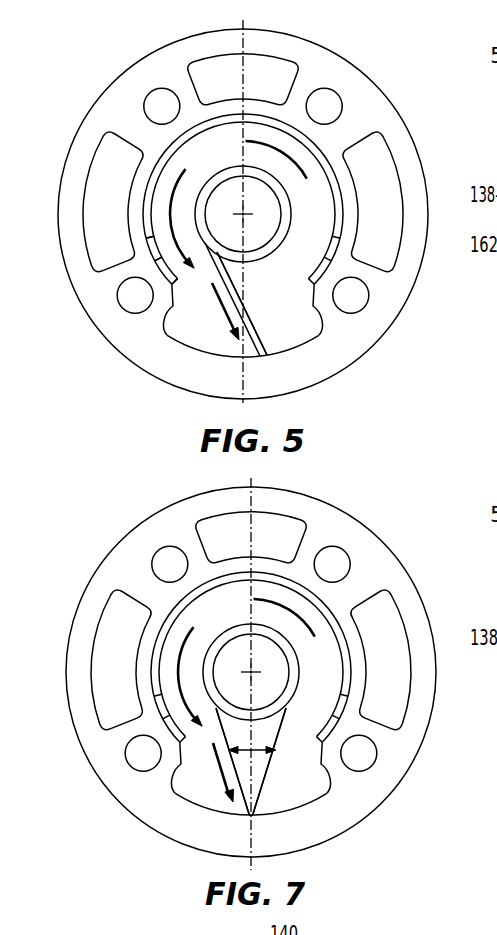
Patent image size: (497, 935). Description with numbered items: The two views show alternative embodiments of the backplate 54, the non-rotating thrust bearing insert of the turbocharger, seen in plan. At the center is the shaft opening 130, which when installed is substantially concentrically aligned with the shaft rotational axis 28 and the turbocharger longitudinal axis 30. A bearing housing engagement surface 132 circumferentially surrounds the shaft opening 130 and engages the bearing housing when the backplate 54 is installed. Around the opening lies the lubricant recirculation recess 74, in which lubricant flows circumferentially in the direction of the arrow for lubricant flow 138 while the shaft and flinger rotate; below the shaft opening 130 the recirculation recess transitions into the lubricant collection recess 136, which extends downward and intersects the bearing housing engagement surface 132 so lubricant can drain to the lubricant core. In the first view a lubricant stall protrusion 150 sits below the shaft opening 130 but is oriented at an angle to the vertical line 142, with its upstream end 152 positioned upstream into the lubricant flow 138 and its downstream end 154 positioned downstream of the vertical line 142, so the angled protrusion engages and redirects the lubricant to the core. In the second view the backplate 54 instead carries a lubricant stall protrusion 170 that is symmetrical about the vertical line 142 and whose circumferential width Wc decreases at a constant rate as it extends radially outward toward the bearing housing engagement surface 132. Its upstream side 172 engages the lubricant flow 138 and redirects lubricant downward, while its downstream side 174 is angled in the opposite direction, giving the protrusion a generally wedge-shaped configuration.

In FIG. 5, the backplate 54 is at (99, 76).
In FIG. 7, the backplate 54 is at (107, 534).
In FIG. 5, the lubricant recirculation recess 74 is at (214, 138).
In FIG. 7, the lubricant recirculation recess 74 is at (220, 598).
In FIG. 5, the bearing housing engagement surface 132 is at (325, 68).
In FIG. 7, the bearing housing engagement surface 132 is at (333, 526).
In FIG. 5, the vertical line 142 is at (256, 23).
In FIG. 7, the vertical line 142 is at (265, 481).
In FIG. 5, the lubricant flow 138 is at (173, 188).
In FIG. 7, the lubricant flow 138 is at (183, 647).
In FIG. 5, the shaft opening 130 is at (282, 203).
In FIG. 7, the shaft opening 130 is at (291, 661).
In FIG. 5, the shaft rotational axis 28 is at (351, 257).
In FIG. 7, the shaft rotational axis 28 is at (360, 717).
In FIG. 5, the turbocharger longitudinal axis 30 is at (442, 268).
In FIG. 7, the turbocharger longitudinal axis 30 is at (450, 732).
In FIG. 5, the upstream end 152 is at (213, 266).
In FIG. 5, the lubricant collection recess 136 is at (180, 328).
In FIG. 7, the lubricant collection recess 136 is at (190, 783).
In FIG. 5, the lubricant stall protrusion 150 is at (256, 332).
In FIG. 5, the downstream end 154 is at (257, 305).
In FIG. 7, the lubricant stall protrusion 170 is at (258, 797).
In FIG. 7, the upstream side 172 is at (220, 725).
In FIG. 7, the downstream side 174 is at (270, 772).
In FIG. 7, the circumferential width Wc is at (257, 742).